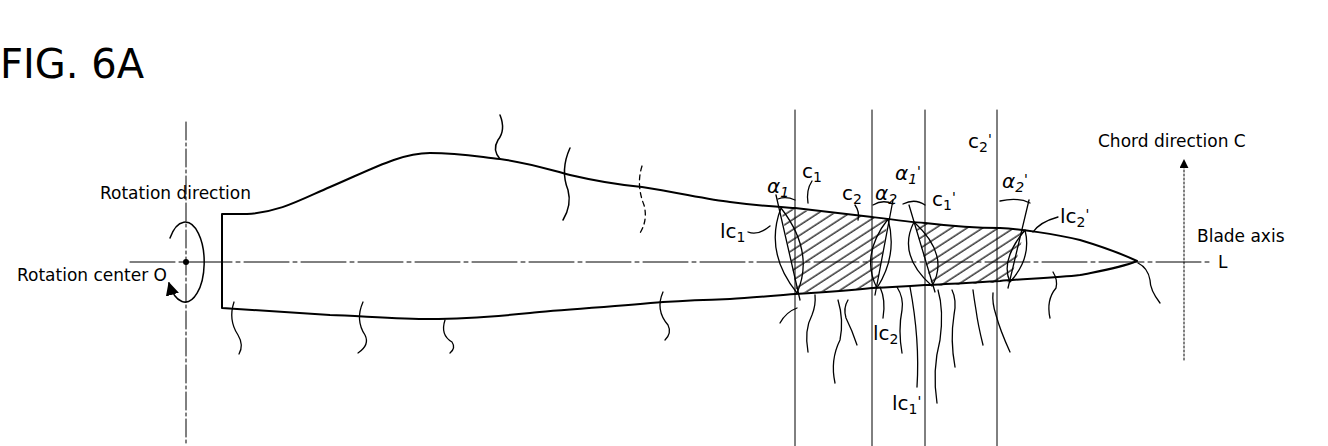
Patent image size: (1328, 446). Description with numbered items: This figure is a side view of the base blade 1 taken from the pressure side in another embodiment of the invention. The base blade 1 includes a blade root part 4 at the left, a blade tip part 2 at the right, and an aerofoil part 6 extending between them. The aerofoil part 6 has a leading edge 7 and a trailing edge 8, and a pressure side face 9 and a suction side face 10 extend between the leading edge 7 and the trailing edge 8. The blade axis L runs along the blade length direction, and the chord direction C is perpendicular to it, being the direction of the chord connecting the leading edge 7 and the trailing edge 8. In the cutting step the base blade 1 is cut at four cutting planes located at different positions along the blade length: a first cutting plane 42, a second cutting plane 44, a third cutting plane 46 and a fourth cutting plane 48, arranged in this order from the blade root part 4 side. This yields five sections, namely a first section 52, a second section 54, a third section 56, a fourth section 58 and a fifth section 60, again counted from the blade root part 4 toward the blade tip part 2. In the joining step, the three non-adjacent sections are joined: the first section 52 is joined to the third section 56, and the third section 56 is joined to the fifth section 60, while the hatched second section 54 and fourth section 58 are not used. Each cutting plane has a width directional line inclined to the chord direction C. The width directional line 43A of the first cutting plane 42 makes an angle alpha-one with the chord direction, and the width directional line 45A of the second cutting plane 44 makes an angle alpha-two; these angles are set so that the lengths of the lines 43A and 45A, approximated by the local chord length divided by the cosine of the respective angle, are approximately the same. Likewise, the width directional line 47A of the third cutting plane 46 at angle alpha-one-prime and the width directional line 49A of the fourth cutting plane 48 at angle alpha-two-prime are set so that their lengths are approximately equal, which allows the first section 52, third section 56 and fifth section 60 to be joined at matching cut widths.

The base blade 1 is at (423, 113).
The blade tip part 2 is at (1157, 294).
The blade root part 4 is at (236, 340).
The aerofoil part 6 is at (359, 341).
The leading edge 7 is at (449, 349).
The trailing edge 8 is at (500, 126).
The pressure side face 9 is at (572, 172).
The suction side face 10 is at (649, 186).
The first cutting plane 42 is at (812, 337).
The width directional line 43A is at (766, 325).
The second cutting plane 44 is at (856, 336).
The width directional line 45A is at (833, 356).
The third cutting plane 46 is at (961, 342).
The width directional line 47A is at (951, 361).
The fourth cutting plane 48 is at (982, 331).
The width directional line 49A is at (1021, 336).
The first section 52 is at (662, 330).
The second section 54 is at (827, 232).
The third section 56 is at (897, 334).
The fourth section 58 is at (947, 237).
The fifth section 60 is at (1054, 309).